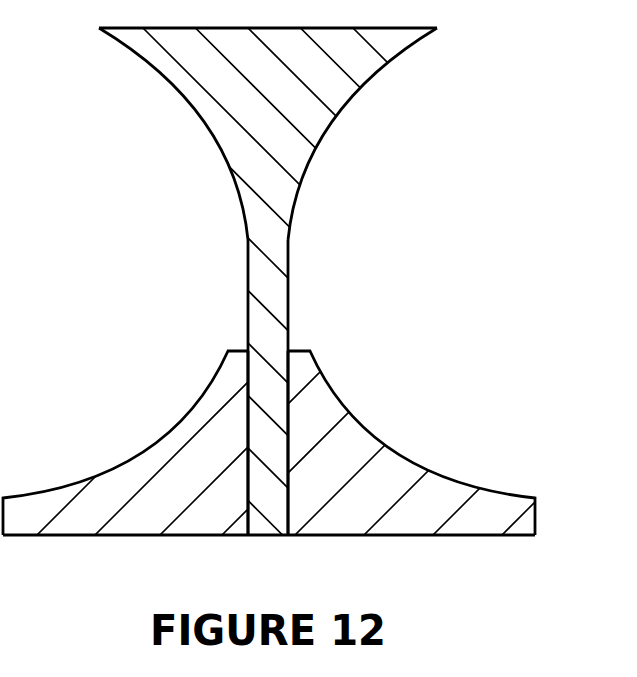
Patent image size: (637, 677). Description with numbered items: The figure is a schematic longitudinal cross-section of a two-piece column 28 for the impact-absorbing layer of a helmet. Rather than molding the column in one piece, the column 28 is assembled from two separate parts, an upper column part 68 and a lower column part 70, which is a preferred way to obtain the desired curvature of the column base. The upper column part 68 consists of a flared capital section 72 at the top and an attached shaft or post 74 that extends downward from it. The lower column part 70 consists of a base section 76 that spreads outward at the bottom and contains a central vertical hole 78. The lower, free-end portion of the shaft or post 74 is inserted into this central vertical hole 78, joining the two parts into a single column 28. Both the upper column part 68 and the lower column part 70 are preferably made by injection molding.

The column 28 is at (318, 338).
The upper column part 68 is at (202, 119).
The lower column part 70 is at (386, 430).
The capital section 72 is at (343, 106).
The shaft or post 74 is at (318, 300).
The base section 76 is at (134, 460).
The central vertical hole 78 is at (270, 441).